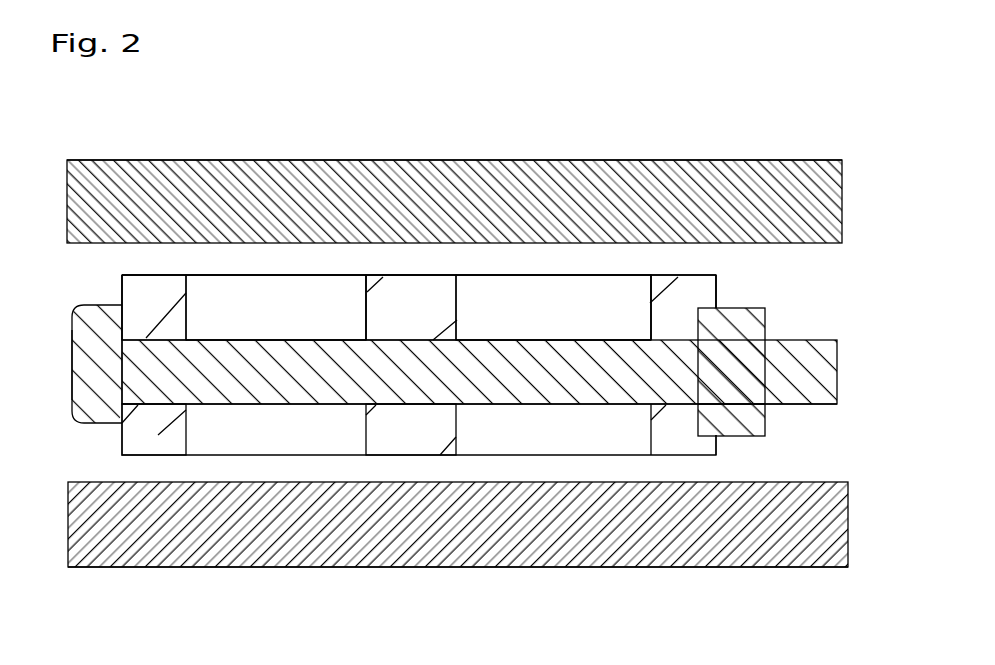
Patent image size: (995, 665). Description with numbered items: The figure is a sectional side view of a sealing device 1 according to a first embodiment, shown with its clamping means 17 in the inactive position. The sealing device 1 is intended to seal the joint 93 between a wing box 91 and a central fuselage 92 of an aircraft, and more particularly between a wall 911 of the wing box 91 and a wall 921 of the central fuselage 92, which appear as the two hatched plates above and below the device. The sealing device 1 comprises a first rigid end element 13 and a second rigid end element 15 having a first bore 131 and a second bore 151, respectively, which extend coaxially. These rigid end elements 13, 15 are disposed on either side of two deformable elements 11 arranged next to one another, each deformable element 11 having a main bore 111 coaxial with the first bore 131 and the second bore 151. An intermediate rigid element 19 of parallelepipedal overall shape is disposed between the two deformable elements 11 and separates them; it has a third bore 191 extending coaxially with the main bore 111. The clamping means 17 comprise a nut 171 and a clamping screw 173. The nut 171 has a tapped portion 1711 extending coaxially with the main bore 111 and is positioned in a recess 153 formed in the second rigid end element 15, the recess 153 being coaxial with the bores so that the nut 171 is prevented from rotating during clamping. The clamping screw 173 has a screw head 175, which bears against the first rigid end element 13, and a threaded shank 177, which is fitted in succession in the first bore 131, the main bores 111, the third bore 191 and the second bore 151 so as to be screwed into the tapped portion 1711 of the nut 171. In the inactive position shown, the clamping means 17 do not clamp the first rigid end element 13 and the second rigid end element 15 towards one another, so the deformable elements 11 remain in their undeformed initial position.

The sealing device 1 is at (750, 450).
The deformable element 11 is at (323, 300).
The main bore 111 is at (258, 335).
The first rigid end element 13 is at (168, 287).
The first bore 131 is at (128, 335).
The second rigid end element 15 is at (665, 302).
The second bore 151 is at (673, 337).
The recess 153 is at (710, 307).
The clamping means 17 is at (832, 376).
The nut 171 is at (750, 328).
The tapped portion 1711 is at (730, 437).
The clamping screw 173 is at (65, 427).
The screw head 175 is at (82, 327).
The threaded shank 177 is at (532, 355).
The intermediate rigid element 19 is at (409, 278).
The third bore 191 is at (399, 337).
The wing box 91 is at (783, 570).
The wall of the wing box 911 is at (568, 552).
The central fuselage 92 is at (823, 152).
The wall of the central fuselage 921 is at (777, 185).
The joint 93 is at (778, 275).